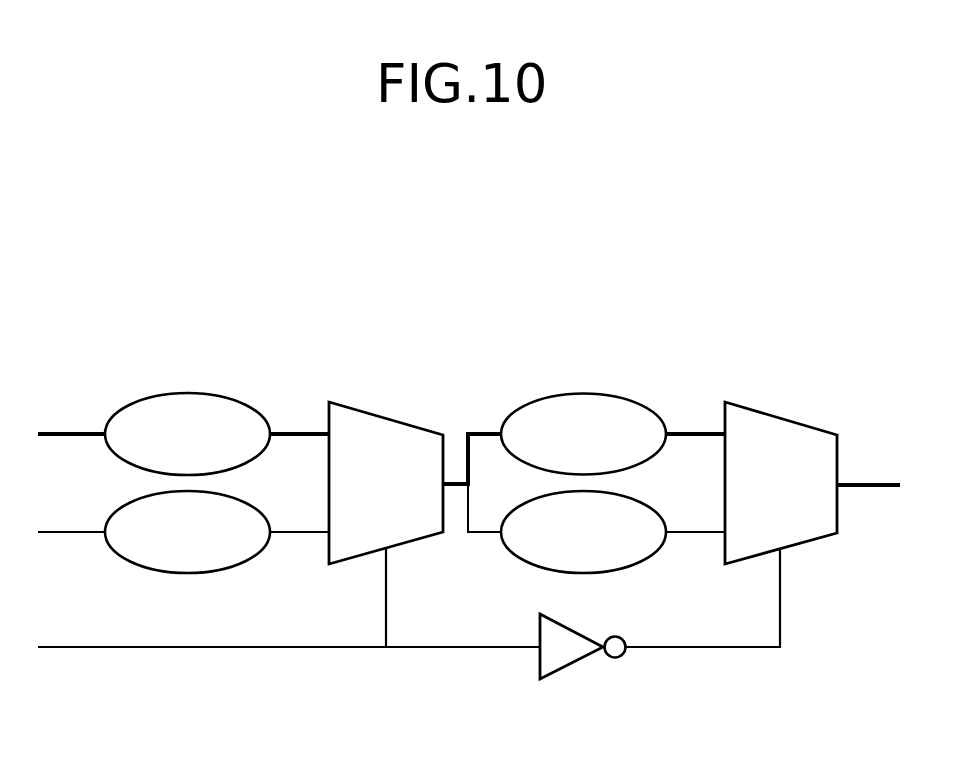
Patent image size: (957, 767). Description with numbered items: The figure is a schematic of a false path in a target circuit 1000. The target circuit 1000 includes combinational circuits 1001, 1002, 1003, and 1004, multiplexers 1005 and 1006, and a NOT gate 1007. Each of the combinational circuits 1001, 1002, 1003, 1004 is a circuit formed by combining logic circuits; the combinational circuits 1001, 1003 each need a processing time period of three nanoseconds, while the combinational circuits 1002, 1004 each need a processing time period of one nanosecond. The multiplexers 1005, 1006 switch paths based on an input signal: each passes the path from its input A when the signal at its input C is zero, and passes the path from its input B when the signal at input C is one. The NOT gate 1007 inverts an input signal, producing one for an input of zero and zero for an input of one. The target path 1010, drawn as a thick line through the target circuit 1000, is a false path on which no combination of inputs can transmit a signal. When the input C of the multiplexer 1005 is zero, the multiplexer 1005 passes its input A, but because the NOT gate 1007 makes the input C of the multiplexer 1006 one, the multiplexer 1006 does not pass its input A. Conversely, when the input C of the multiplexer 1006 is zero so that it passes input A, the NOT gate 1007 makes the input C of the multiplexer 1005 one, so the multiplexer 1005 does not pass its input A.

The target circuit 1000 is at (769, 198).
The target path 1010 is at (53, 431).
The combinational circuit 1001 is at (242, 402).
The combinational circuit 1002 is at (243, 571).
The combinational circuit 1003 is at (641, 402).
The combinational circuit 1004 is at (641, 565).
The multiplexer 1005 is at (357, 405).
The multiplexer 1006 is at (752, 407).
The NOT gate 1007 is at (578, 668).